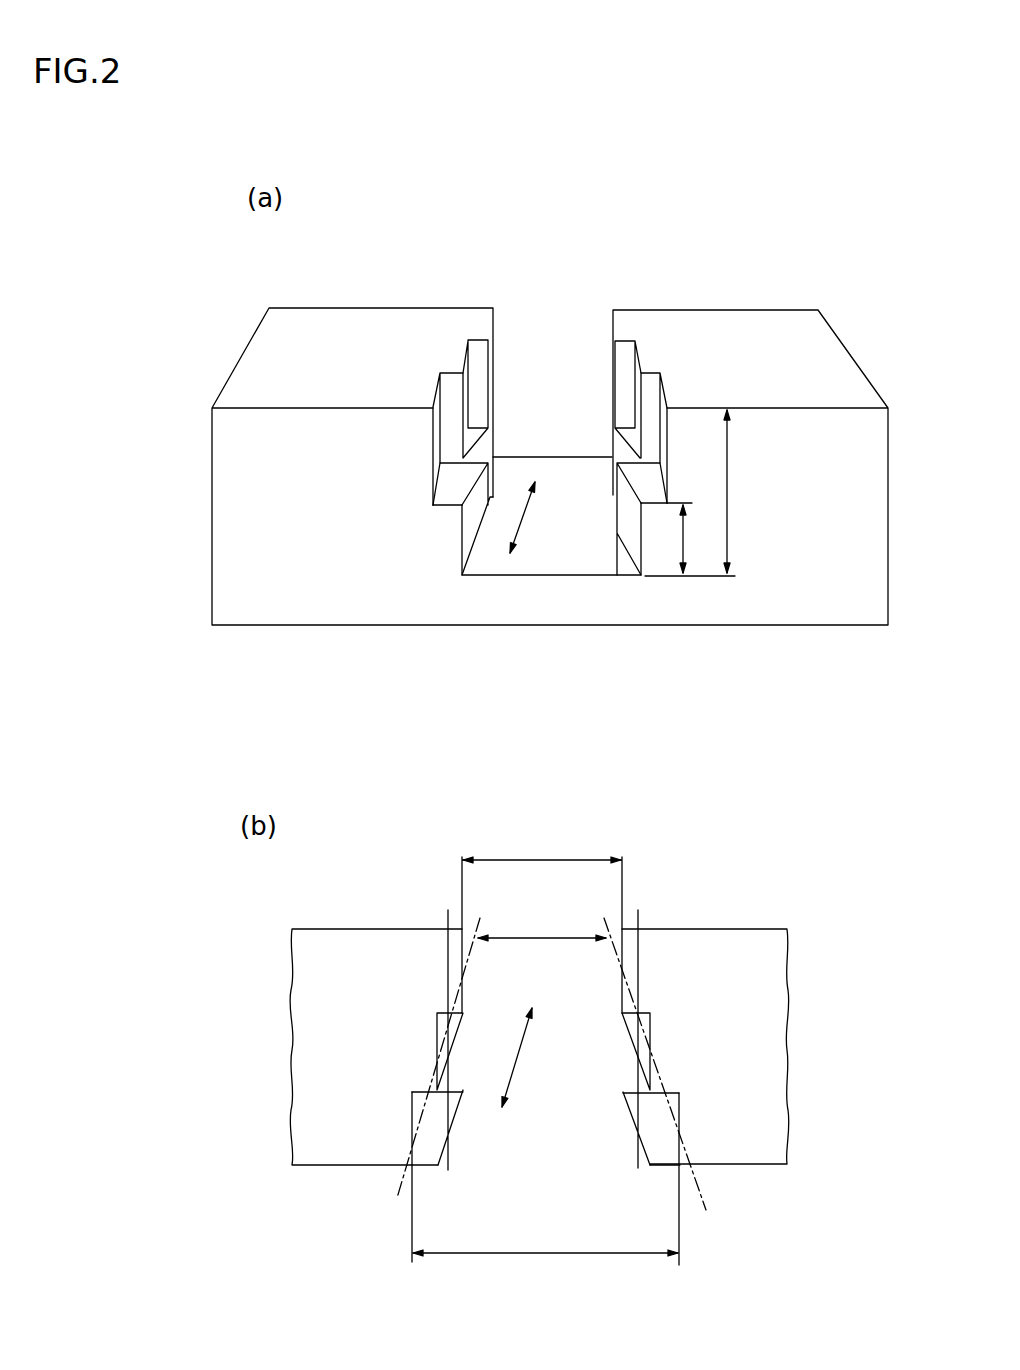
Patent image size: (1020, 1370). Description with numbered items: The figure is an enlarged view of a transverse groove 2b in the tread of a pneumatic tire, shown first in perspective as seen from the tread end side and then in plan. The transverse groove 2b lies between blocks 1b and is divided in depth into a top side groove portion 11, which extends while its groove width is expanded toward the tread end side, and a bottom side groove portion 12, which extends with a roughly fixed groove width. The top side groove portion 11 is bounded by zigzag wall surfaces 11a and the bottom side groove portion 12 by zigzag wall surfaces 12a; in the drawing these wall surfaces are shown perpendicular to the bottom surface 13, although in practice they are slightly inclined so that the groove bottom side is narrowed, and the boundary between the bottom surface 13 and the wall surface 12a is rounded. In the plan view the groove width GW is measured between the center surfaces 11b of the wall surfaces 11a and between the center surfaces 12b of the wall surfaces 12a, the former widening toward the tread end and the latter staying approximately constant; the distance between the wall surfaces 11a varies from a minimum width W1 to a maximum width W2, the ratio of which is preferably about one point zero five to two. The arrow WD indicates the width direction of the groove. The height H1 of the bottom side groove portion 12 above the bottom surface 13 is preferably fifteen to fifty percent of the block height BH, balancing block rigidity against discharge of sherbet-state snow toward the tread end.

The block 1b is at (395, 320).
The transverse groove 2b is at (555, 280).
The top side groove portion 11 is at (603, 379).
The wall surface 11a is at (665, 416).
The center surface 11b is at (393, 1173).
The bottom side groove portion 12 is at (605, 495).
The wall surface 12a is at (630, 518).
The center surface 12b is at (452, 1166).
The bottom surface 13 is at (545, 470).
The block height BH is at (709, 493).
The height of the bottom side groove portion H1 is at (697, 538).
The width direction WD is at (540, 794).
The width of the minimum portion W1 is at (542, 879).
The groove width GW is at (542, 921).
The width of the maximum portion W2 is at (545, 1239).